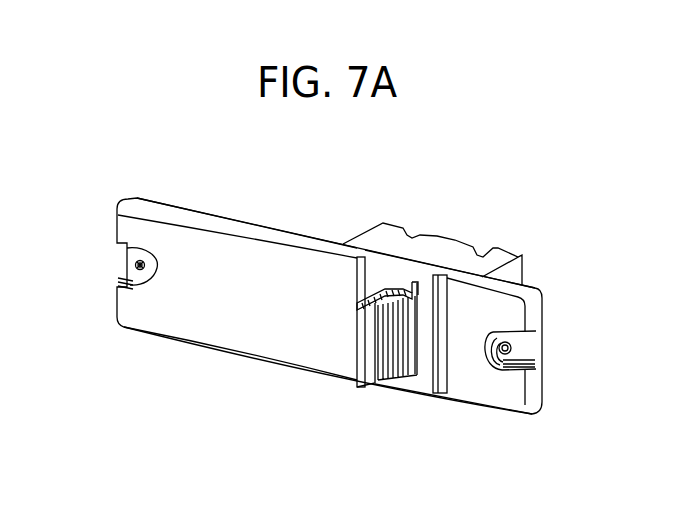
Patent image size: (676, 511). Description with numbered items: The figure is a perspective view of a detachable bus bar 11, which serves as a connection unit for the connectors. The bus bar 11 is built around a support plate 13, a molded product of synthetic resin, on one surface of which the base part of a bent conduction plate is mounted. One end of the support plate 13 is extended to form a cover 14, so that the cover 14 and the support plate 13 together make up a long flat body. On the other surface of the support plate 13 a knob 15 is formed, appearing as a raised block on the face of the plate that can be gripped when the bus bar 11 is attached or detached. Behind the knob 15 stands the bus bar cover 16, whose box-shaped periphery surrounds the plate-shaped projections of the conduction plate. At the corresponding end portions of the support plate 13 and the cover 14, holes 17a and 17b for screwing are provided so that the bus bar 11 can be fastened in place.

The bus bar 11 is at (336, 145).
The support plate 13 is at (478, 390).
The cover 14 is at (204, 332).
The knob 15 is at (365, 375).
The bus bar cover 16 is at (447, 243).
The hole for screwing 17a is at (140, 273).
The hole for screwing 17b is at (505, 353).